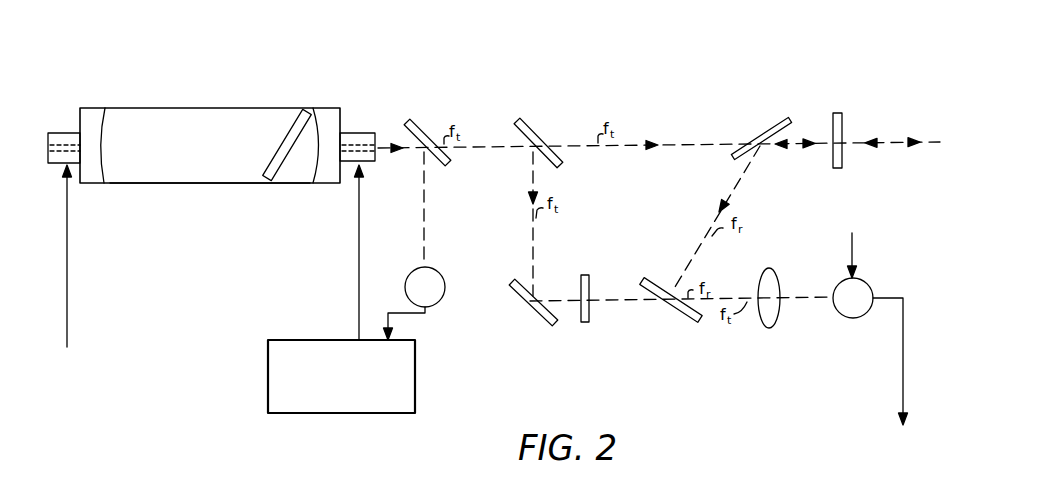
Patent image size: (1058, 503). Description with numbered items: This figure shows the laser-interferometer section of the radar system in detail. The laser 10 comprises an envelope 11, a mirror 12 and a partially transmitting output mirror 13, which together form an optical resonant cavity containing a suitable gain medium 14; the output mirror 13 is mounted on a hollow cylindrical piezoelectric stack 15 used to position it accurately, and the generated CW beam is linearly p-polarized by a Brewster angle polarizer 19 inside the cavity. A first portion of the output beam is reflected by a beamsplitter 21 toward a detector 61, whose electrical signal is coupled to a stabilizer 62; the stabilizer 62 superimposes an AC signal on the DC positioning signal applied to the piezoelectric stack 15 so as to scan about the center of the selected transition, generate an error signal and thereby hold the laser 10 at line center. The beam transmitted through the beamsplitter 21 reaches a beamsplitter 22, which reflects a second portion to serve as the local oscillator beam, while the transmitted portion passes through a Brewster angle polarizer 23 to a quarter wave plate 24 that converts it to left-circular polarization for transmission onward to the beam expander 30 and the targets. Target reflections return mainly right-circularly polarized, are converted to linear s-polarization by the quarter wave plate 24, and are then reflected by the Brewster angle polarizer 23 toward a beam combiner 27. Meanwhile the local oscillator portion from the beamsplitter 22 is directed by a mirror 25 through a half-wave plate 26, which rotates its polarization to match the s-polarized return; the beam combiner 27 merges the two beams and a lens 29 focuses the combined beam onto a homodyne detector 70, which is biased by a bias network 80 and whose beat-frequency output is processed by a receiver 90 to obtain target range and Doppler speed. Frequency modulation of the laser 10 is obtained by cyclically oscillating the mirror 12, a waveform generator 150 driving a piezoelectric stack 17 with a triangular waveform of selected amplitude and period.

The laser 10 is at (229, 62).
The envelope 11 is at (262, 108).
The mirror 12 is at (95, 116).
The partially transmitting output mirror 13 is at (336, 108).
The gain medium 14 is at (170, 177).
The hollow cylindrical piezoelectric stack 15 is at (362, 132).
The piezoelectric stack 17 is at (60, 137).
The Brewster angle polarizer 19 is at (283, 163).
The beamsplitter 21 is at (418, 124).
The beamsplitter 22 is at (532, 122).
The Brewster angle polarizer 23 is at (785, 120).
The quarter wave plate 24 is at (843, 122).
The mirror 25 is at (525, 284).
The half-wave plate 26 is at (589, 278).
The beam combiner 27 is at (649, 282).
The lens 29 is at (779, 278).
The beam expander 30 is at (905, 171).
The detector 61 is at (418, 267).
The stabilizer 62 is at (300, 340).
The homodyne detector 70 is at (865, 283).
The bias network 80 is at (868, 236).
The receiver 90 is at (896, 382).
The waveform generator 150 is at (101, 288).